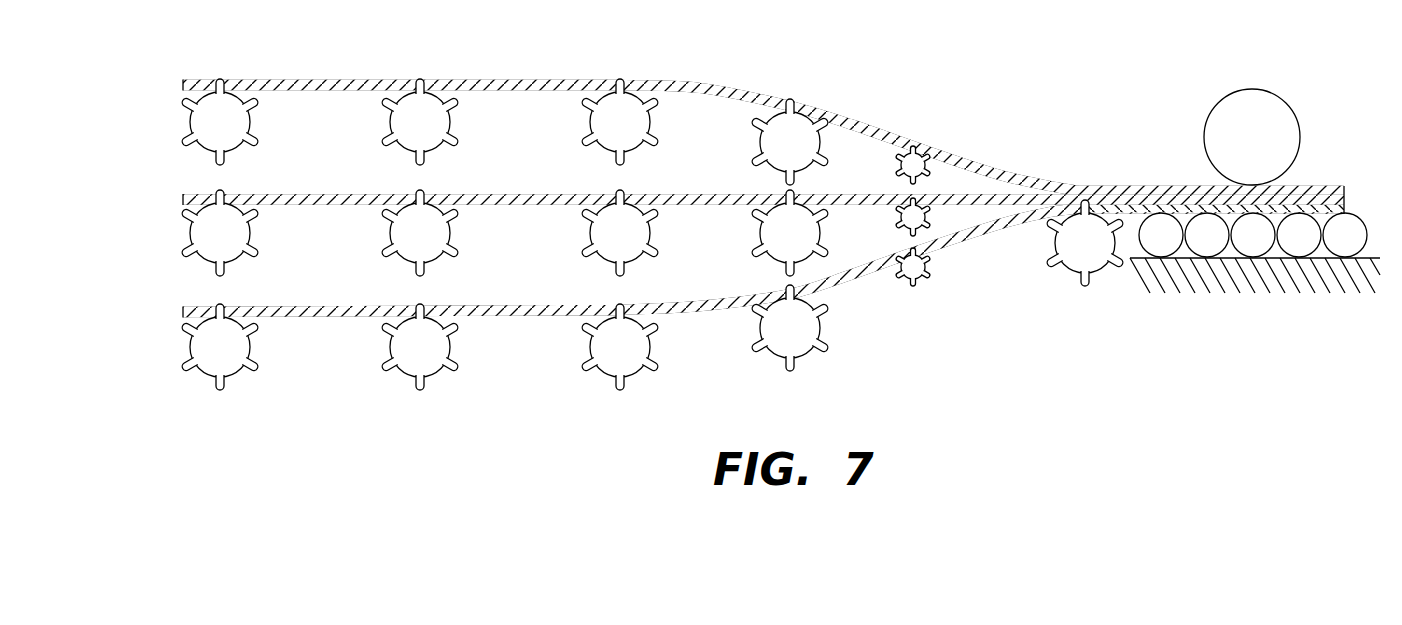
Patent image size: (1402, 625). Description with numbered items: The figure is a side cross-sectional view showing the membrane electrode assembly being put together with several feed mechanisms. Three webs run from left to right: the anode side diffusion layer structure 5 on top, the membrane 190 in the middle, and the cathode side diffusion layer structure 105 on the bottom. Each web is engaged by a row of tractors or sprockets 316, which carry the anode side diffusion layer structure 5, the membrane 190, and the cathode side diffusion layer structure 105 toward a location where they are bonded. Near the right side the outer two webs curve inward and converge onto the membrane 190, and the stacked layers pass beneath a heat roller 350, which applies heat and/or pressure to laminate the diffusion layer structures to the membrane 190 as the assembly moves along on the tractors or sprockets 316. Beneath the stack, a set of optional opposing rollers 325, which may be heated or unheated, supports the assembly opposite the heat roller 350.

The anode side diffusion layer structure 5 is at (530, 84).
The membrane 190 is at (700, 200).
The cathode side diffusion layer structure 105 is at (877, 263).
The tractor or sprocket 316 is at (799, 130).
The heat roller 350 is at (1251, 103).
The opposing roller 325 is at (1345, 250).